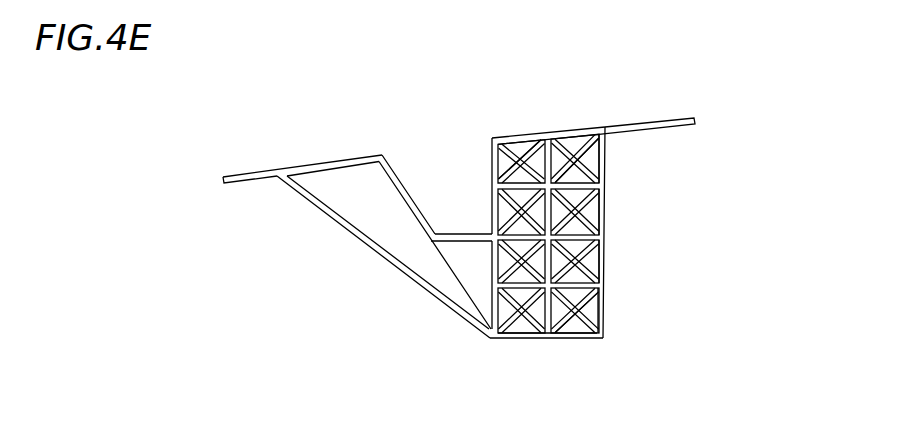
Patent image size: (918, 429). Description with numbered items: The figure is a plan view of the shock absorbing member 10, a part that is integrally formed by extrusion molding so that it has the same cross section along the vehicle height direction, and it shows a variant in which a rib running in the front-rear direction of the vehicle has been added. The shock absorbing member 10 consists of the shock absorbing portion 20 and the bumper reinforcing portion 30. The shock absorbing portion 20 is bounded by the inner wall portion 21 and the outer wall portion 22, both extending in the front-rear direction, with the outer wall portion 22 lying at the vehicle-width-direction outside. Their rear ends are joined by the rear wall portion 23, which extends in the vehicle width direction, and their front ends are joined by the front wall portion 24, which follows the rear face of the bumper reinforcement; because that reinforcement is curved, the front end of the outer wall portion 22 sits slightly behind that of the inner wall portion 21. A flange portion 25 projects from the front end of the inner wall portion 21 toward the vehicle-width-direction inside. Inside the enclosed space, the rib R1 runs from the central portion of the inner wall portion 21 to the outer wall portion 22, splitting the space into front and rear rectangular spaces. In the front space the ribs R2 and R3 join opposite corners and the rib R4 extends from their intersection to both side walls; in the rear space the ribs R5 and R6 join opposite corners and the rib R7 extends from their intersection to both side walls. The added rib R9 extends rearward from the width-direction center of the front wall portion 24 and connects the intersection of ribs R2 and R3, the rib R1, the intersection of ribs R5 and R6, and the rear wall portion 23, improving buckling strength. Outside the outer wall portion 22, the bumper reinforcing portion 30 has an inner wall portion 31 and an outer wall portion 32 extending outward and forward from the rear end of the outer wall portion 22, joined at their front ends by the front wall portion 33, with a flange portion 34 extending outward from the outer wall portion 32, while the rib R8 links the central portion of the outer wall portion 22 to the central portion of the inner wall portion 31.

The shock absorbing member 10 is at (469, 342).
The shock absorbing portion 20 is at (711, 207).
The inner wall portion 21 is at (605, 199).
The outer wall portion 22 is at (490, 146).
The rear wall portion 23 is at (548, 339).
The front wall portion 24 is at (556, 131).
The flange portion 25 is at (659, 121).
The bumper reinforcing portion 30 is at (383, 292).
The inner wall portion 31 is at (397, 170).
The outer wall portion 32 is at (320, 212).
The front wall portion 33 is at (330, 162).
The flange portion 34 is at (242, 177).
The rib R1 is at (568, 233).
The rib R2 is at (520, 178).
The rib R3 is at (587, 152).
The rib R4 is at (577, 180).
The rib R5 is at (580, 262).
The rib R6 is at (587, 308).
The rib R7 is at (583, 290).
The rib R8 is at (458, 233).
The rib R9 is at (538, 160).